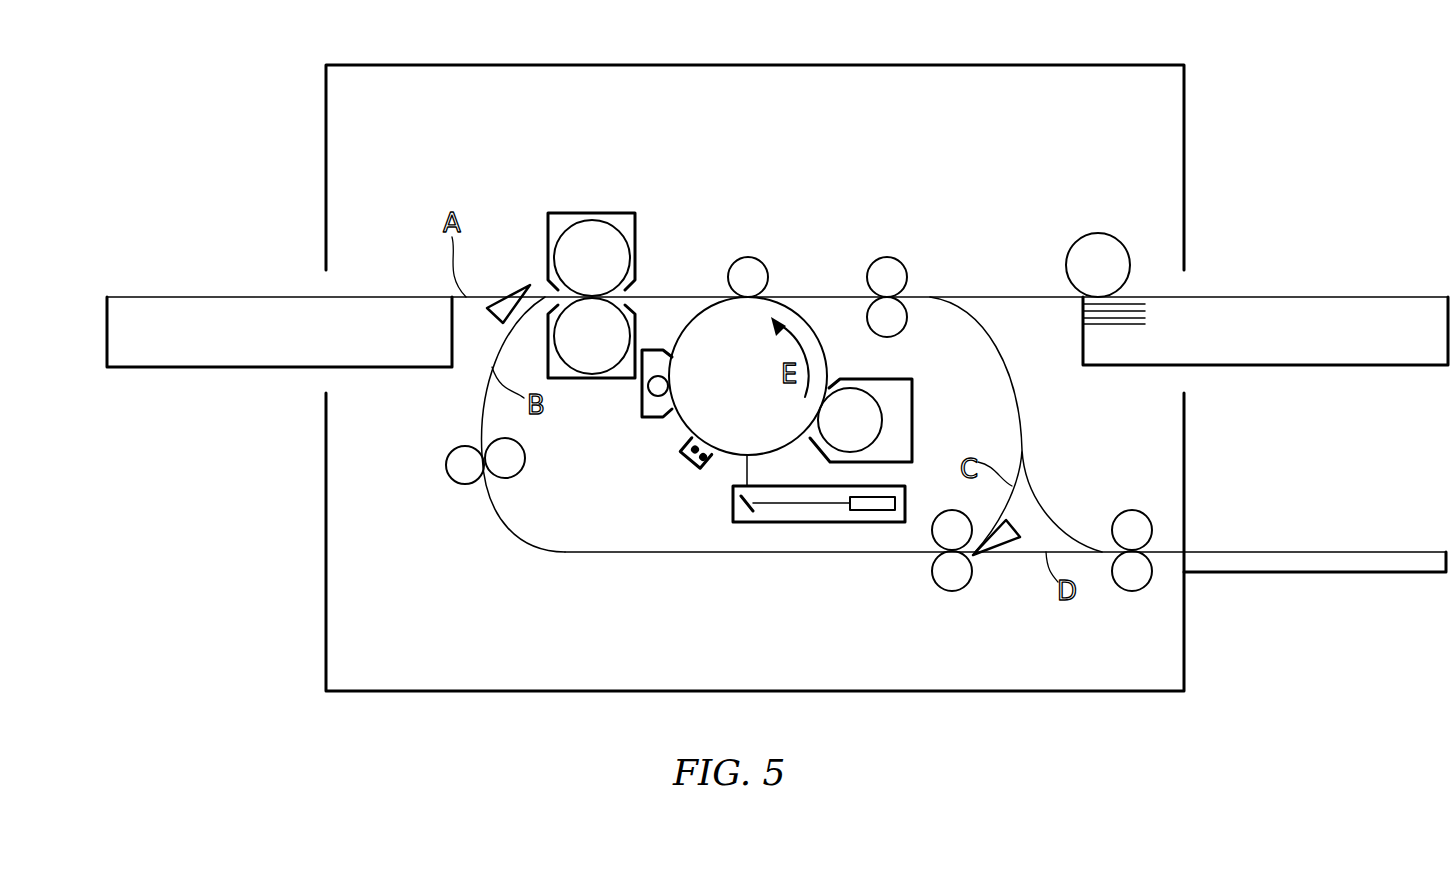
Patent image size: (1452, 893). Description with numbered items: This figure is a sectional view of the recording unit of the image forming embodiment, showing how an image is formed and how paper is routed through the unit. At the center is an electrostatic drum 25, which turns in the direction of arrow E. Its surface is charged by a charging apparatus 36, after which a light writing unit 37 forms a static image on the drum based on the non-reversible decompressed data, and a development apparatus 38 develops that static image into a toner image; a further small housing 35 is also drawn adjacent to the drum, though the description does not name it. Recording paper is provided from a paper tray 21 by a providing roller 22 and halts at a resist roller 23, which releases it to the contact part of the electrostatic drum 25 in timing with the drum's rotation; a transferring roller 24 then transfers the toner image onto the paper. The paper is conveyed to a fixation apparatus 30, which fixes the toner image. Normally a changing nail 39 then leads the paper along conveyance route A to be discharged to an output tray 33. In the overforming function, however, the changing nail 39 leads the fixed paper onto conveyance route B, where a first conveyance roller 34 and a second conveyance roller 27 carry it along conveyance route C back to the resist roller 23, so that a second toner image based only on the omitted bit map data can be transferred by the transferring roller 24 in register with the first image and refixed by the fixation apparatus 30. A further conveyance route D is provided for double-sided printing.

The paper tray 21 is at (1282, 360).
The providing roller 22 is at (1100, 240).
The resist roller 23 is at (890, 262).
The transferring roller 24 is at (750, 262).
The electrostatic drum 25 is at (812, 327).
The second conveyance roller 27 is at (955, 591).
The fixation apparatus 30 is at (603, 222).
The output tray 33 is at (170, 360).
The first conveyance roller 34 is at (454, 481).
The charger 35 is at (649, 418).
The charging apparatus 36 is at (690, 466).
The light writing unit 37 is at (786, 525).
The development apparatus 38 is at (872, 400).
The changing nail 39 is at (507, 300).